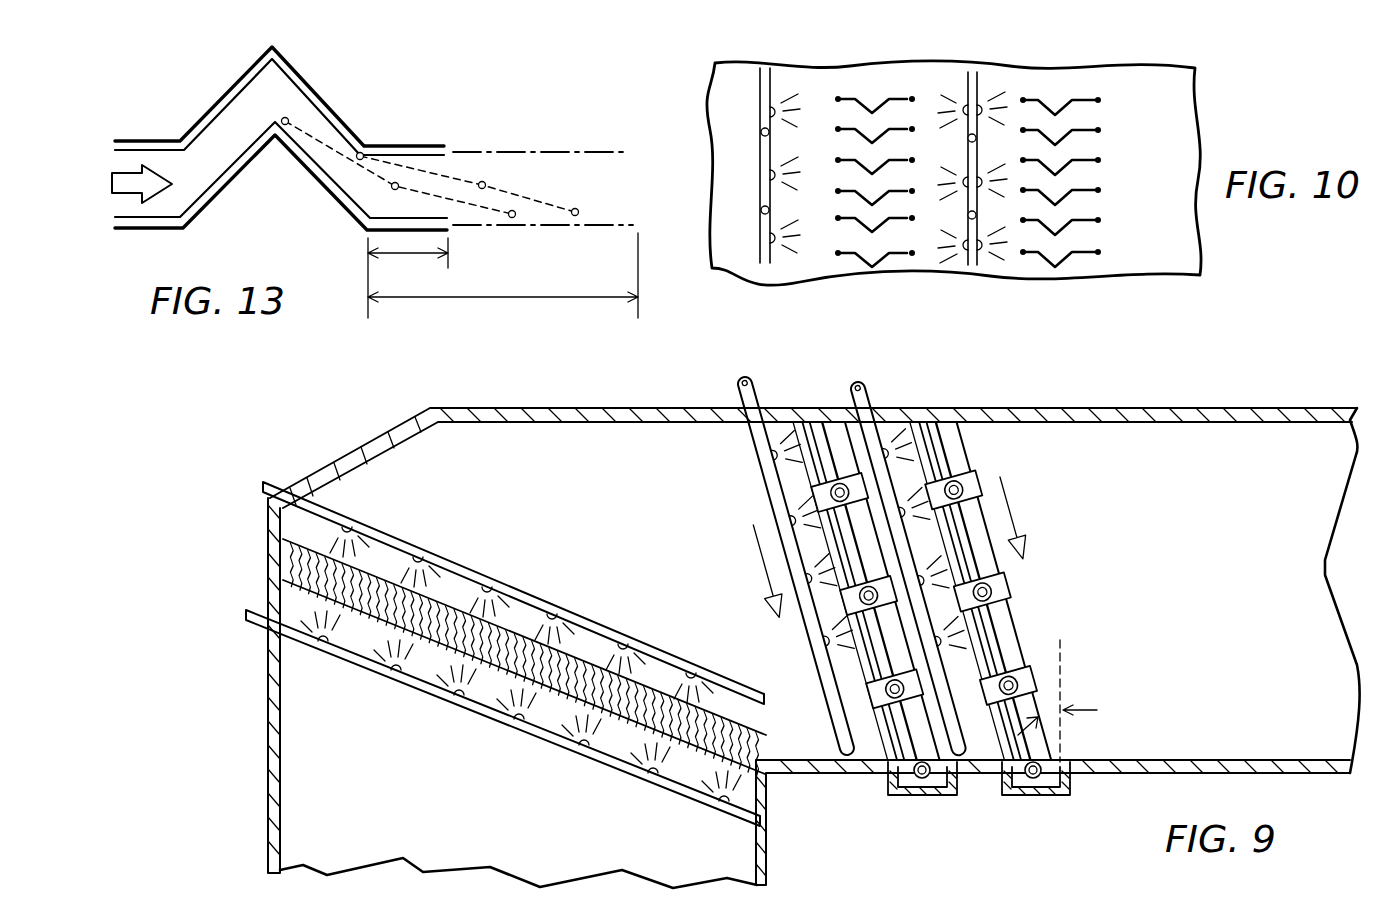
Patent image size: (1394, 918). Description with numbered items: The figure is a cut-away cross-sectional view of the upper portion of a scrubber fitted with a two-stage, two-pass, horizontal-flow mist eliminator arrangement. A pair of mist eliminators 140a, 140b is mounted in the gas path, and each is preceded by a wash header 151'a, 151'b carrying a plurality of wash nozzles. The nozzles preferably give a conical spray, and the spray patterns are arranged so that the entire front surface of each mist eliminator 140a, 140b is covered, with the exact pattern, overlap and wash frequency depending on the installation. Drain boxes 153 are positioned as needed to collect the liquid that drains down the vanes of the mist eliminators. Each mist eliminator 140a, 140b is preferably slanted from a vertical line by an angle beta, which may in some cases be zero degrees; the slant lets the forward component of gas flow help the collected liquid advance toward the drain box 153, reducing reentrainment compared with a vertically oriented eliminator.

The mist eliminator 140a is at (830, 432).
The mist eliminator 140b is at (943, 467).
The wash header 151'a is at (754, 561).
The wash header 151'b is at (932, 619).
The drain box 153 is at (1020, 668).